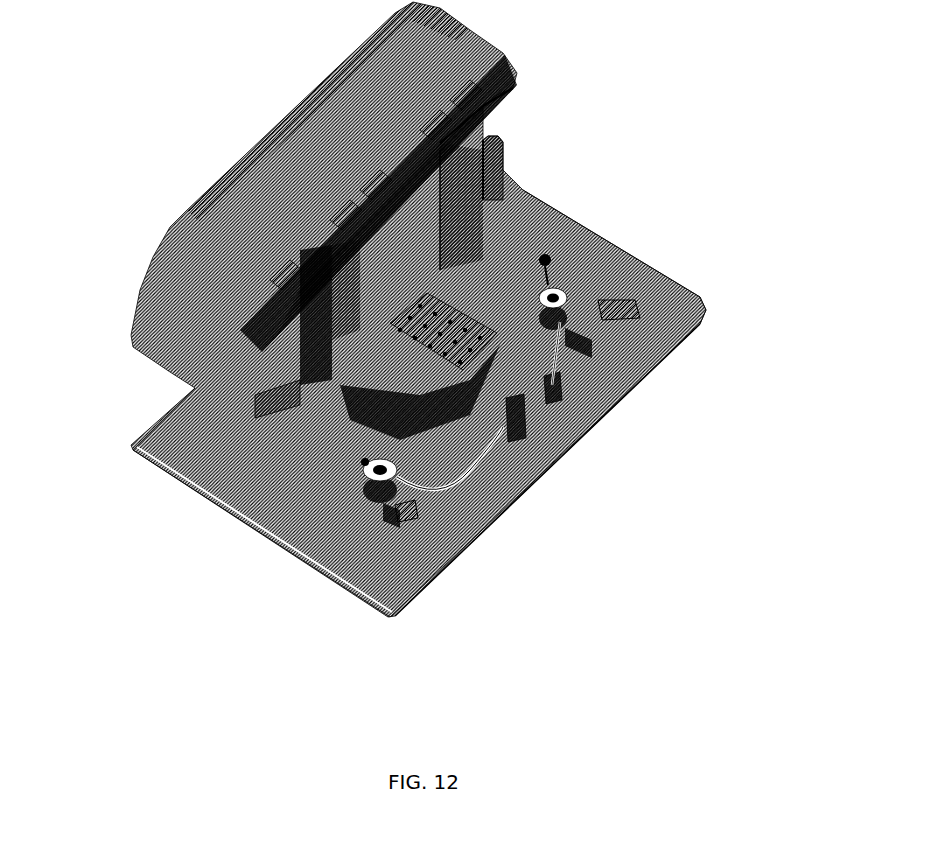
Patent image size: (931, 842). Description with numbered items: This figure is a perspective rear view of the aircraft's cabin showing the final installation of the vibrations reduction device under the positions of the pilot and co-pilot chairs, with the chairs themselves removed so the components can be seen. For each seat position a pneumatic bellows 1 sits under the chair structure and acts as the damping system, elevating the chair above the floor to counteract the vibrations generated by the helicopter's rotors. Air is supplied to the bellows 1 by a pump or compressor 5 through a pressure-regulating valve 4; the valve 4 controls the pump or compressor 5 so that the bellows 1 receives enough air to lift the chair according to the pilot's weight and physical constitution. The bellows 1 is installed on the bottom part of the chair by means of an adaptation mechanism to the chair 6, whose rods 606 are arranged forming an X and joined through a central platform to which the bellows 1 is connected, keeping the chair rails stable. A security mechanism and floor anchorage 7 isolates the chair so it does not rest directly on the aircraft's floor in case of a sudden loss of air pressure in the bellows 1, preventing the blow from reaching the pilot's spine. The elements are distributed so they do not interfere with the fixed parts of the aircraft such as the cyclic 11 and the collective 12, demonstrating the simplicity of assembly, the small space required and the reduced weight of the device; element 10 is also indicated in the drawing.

The pneumatic bellows 1 is at (572, 320).
The pressure-regulating valve 4 is at (562, 408).
The pump or compressor 5 is at (565, 428).
The adaptation mechanism to the chair 6 is at (613, 313).
The security mechanism and floor anchorage 7 is at (538, 268).
The base plate 10 is at (215, 503).
The cyclic 11 is at (290, 388).
The collective 12 is at (418, 309).
The rods 606 is at (588, 352).